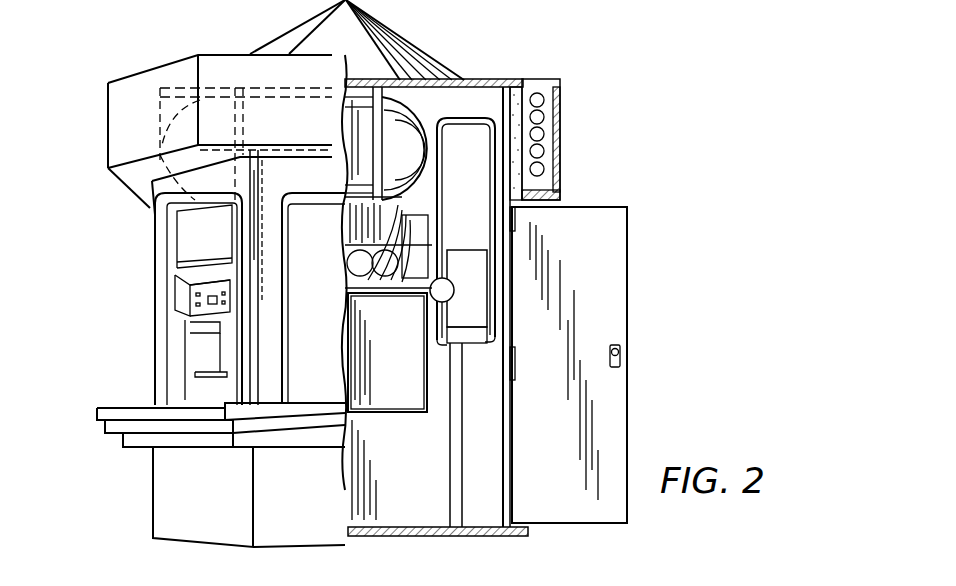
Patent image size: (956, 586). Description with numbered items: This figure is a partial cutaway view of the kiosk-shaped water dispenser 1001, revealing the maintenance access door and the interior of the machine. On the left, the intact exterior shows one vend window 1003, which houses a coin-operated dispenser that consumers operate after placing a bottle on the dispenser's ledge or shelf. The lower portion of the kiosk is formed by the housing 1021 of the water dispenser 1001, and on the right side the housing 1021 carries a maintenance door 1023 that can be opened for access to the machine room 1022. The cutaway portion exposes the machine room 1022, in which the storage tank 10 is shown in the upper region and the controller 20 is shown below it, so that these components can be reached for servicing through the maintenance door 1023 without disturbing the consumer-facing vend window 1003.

The water dispenser 1001 is at (575, 136).
The vend window 1003 is at (185, 332).
The housing 1021 is at (173, 487).
The machine room 1022 is at (370, 484).
The maintenance door 1023 is at (593, 217).
The storage tank 10 is at (366, 140).
The controller 20 is at (393, 378).